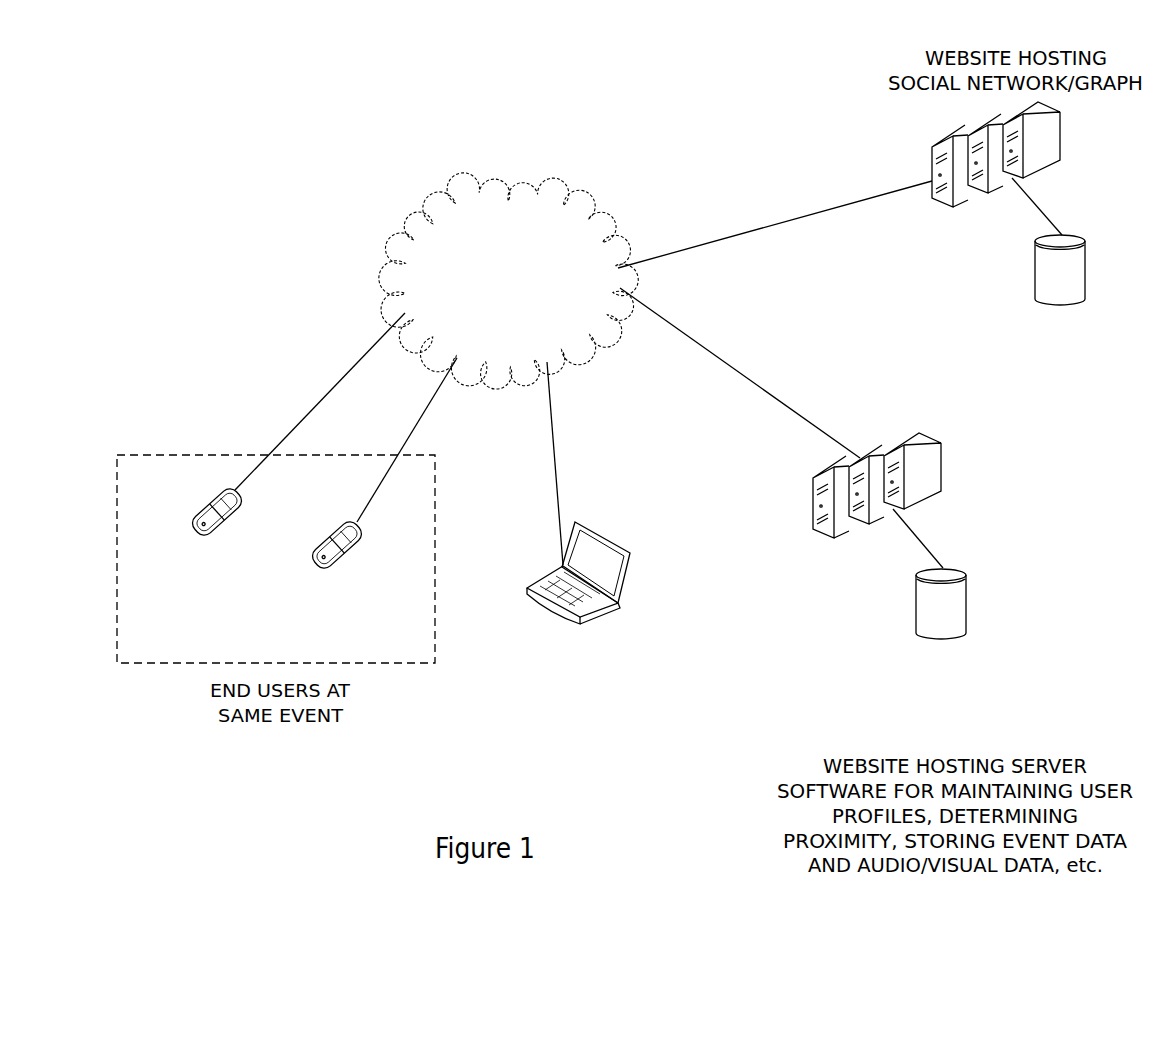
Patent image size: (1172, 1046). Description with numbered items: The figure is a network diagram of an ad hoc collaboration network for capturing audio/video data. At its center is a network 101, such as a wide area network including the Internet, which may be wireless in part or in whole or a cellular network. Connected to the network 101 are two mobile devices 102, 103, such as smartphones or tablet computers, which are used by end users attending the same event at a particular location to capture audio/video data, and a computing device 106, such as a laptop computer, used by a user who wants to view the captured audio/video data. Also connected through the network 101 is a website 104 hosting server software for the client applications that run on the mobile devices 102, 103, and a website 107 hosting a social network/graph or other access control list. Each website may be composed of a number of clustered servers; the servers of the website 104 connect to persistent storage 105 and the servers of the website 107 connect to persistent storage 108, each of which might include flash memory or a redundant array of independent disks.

The network 101 is at (420, 237).
The mobile device 102 is at (220, 538).
The mobile device 103 is at (340, 568).
The website 104 is at (833, 539).
The persistent storage 105 is at (946, 640).
The computing device 106 is at (593, 616).
The website 107 is at (952, 208).
The persistent storage 108 is at (1065, 306).